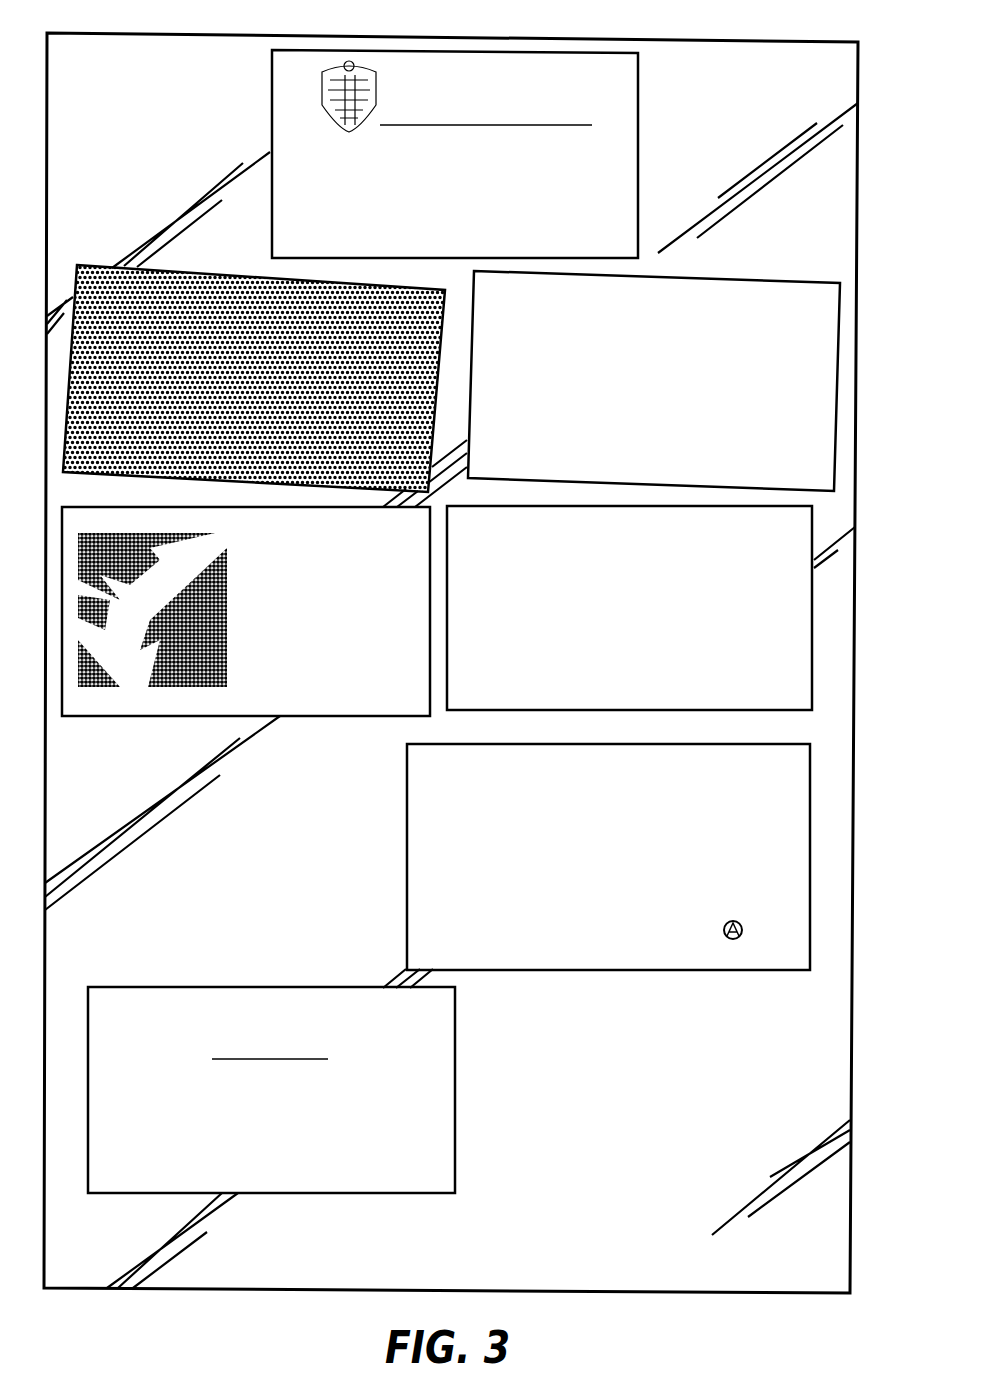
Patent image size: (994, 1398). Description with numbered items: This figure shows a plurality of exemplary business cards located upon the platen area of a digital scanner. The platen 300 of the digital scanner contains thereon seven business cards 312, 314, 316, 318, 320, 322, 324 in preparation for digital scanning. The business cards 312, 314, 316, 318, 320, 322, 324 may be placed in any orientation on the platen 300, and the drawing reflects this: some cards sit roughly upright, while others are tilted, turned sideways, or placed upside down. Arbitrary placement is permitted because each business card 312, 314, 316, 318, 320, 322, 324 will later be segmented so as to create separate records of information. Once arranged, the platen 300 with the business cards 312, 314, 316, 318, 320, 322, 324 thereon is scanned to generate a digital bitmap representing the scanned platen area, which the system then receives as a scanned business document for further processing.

The platen 300 is at (133, 33).
The business card 312 is at (800, 632).
The business card 314 is at (798, 895).
The business card 316 is at (633, 77).
The business card 318 is at (132, 273).
The business card 320 is at (358, 708).
The business card 322 is at (445, 1113).
The business card 324 is at (832, 393).